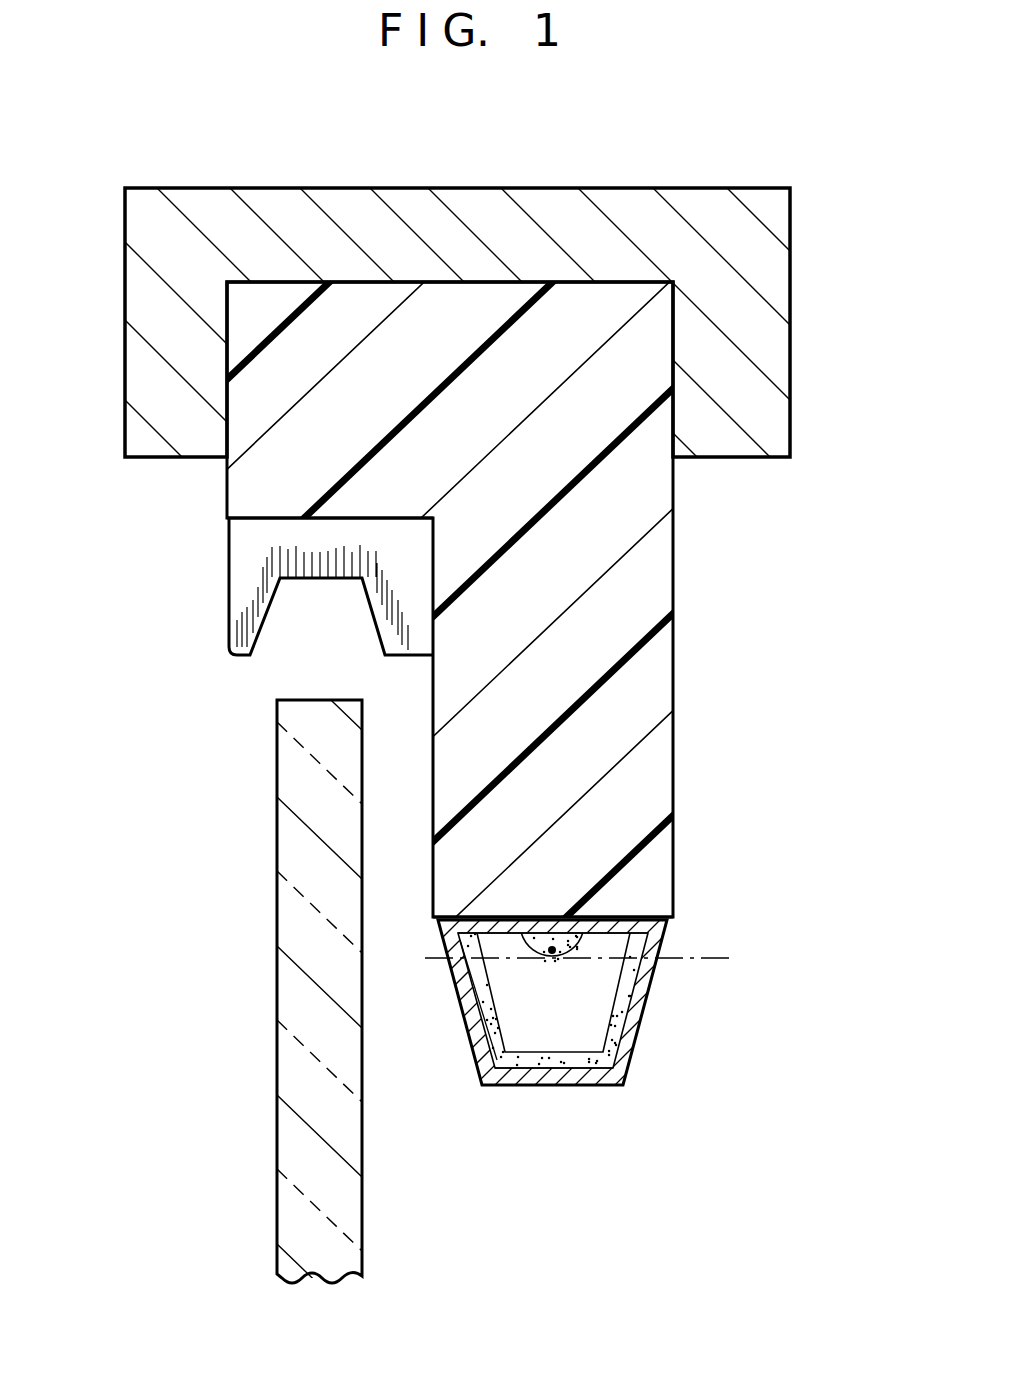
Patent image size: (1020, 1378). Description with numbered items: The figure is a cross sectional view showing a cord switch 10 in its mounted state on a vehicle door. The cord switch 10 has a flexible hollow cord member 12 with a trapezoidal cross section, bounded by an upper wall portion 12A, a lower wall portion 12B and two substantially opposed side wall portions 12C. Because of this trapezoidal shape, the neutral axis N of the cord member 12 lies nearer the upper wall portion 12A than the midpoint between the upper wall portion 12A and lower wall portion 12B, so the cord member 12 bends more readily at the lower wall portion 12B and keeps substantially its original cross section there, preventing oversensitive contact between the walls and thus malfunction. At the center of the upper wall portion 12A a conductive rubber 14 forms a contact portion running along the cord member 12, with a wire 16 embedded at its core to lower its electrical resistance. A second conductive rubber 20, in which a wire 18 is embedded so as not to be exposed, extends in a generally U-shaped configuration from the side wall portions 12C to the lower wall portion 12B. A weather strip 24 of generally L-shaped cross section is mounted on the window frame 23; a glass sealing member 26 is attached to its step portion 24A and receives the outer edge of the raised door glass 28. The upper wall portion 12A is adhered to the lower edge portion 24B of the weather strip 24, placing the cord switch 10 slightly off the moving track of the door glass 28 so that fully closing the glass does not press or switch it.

The cord switch 10 is at (725, 917).
The cord member 12 is at (637, 1048).
The upper wall portion 12A is at (550, 933).
The lower wall portion 12B is at (555, 1090).
The side wall portions 12C is at (458, 1002).
The conductive rubber 14 is at (520, 947).
The wire 16 is at (552, 950).
The wire 18 is at (650, 1000).
The conductive rubber 20 is at (475, 1003).
The window frame 23 is at (790, 357).
The weather strip 24 is at (667, 573).
The step portion 24A is at (343, 522).
The lower edge portion 24B is at (636, 940).
The glass sealing member 26 is at (243, 563).
The door glass 28 is at (280, 982).
The neutral axis N is at (733, 958).